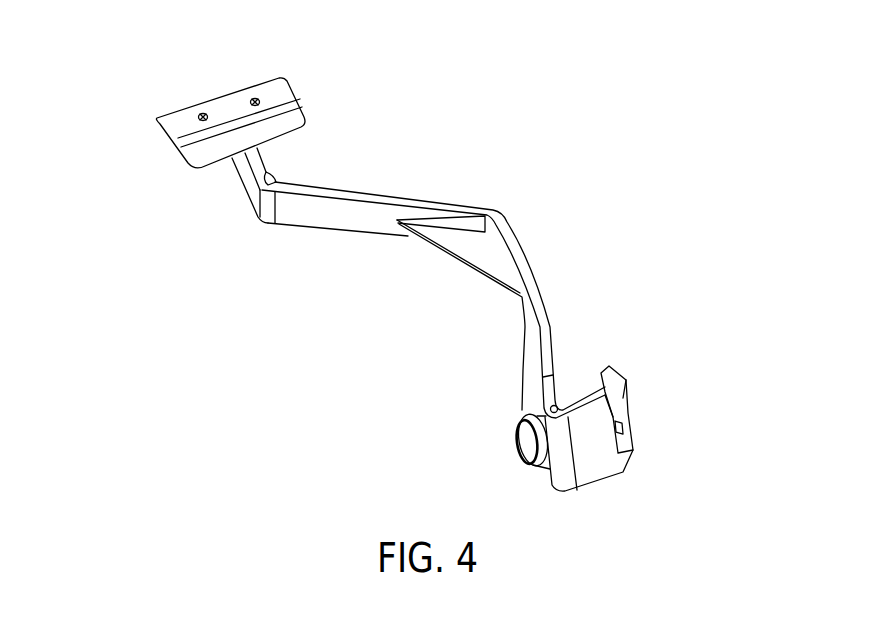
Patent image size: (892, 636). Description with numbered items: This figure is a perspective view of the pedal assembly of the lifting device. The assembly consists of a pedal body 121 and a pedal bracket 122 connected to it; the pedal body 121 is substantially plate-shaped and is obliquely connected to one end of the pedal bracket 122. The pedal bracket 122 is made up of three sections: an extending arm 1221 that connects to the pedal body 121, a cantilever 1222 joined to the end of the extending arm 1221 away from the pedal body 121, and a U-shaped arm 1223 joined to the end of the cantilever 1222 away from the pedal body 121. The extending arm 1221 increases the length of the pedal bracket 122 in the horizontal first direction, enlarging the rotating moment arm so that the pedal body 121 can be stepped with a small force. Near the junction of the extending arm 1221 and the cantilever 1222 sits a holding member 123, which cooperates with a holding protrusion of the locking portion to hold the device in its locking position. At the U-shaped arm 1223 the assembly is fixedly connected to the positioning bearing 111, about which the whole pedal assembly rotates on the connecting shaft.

The pedal body 121 is at (222, 108).
The pedal bracket 122 is at (508, 190).
The extending arm 1221 is at (257, 187).
The holding member 123 is at (278, 176).
The cantilever 1222 is at (527, 265).
The U-shaped arm 1223 is at (622, 380).
The positioning bearing 111 is at (516, 442).